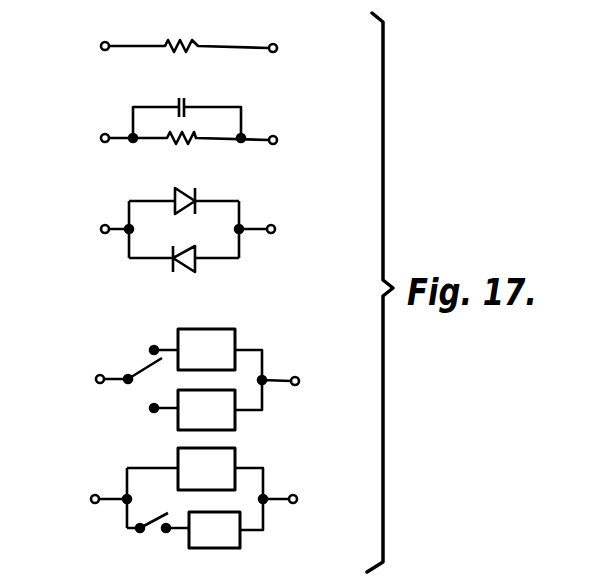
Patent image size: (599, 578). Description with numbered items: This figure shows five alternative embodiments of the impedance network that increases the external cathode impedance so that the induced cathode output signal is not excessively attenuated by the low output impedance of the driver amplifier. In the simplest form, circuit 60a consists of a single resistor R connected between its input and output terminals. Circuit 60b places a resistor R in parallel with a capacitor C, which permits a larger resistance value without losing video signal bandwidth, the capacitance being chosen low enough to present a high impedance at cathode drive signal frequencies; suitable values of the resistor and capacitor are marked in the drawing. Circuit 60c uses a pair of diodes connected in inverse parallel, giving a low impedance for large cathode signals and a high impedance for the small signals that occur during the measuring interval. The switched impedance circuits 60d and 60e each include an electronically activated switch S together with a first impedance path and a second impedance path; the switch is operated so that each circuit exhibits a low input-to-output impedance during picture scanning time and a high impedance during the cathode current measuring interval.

The single resistor circuit 60a is at (76, 51).
The parallel resistance and capacitance circuit 60b is at (76, 149).
The inverse parallel diode circuit 60c is at (76, 236).
The switched impedance circuit 60d is at (76, 386).
The switched impedance circuit 60e is at (73, 504).